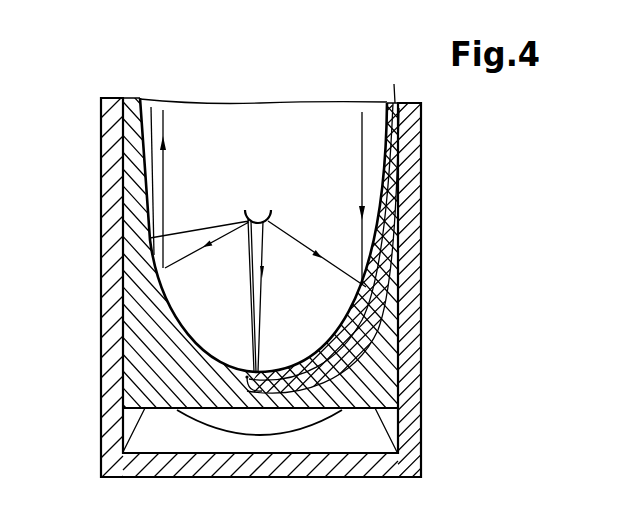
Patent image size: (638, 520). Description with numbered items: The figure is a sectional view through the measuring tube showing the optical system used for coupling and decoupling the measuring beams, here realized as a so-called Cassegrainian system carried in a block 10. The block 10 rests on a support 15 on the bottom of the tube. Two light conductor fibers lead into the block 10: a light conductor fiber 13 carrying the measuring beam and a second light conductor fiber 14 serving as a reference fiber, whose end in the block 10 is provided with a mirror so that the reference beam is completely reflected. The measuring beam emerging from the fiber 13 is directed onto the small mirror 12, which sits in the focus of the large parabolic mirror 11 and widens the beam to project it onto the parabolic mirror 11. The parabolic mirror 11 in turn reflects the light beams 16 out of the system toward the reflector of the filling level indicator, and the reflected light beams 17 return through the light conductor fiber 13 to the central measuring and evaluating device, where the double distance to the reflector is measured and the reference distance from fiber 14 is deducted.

The block 10 is at (158, 366).
The large parabolic mirror 11 is at (180, 317).
The small mirror 12 is at (243, 214).
The light conductor fiber 13 is at (358, 328).
The second light conductor fiber 14 is at (388, 291).
The support 15 is at (363, 437).
The light beams 16 is at (162, 172).
The reflected light beams 17 is at (362, 186).